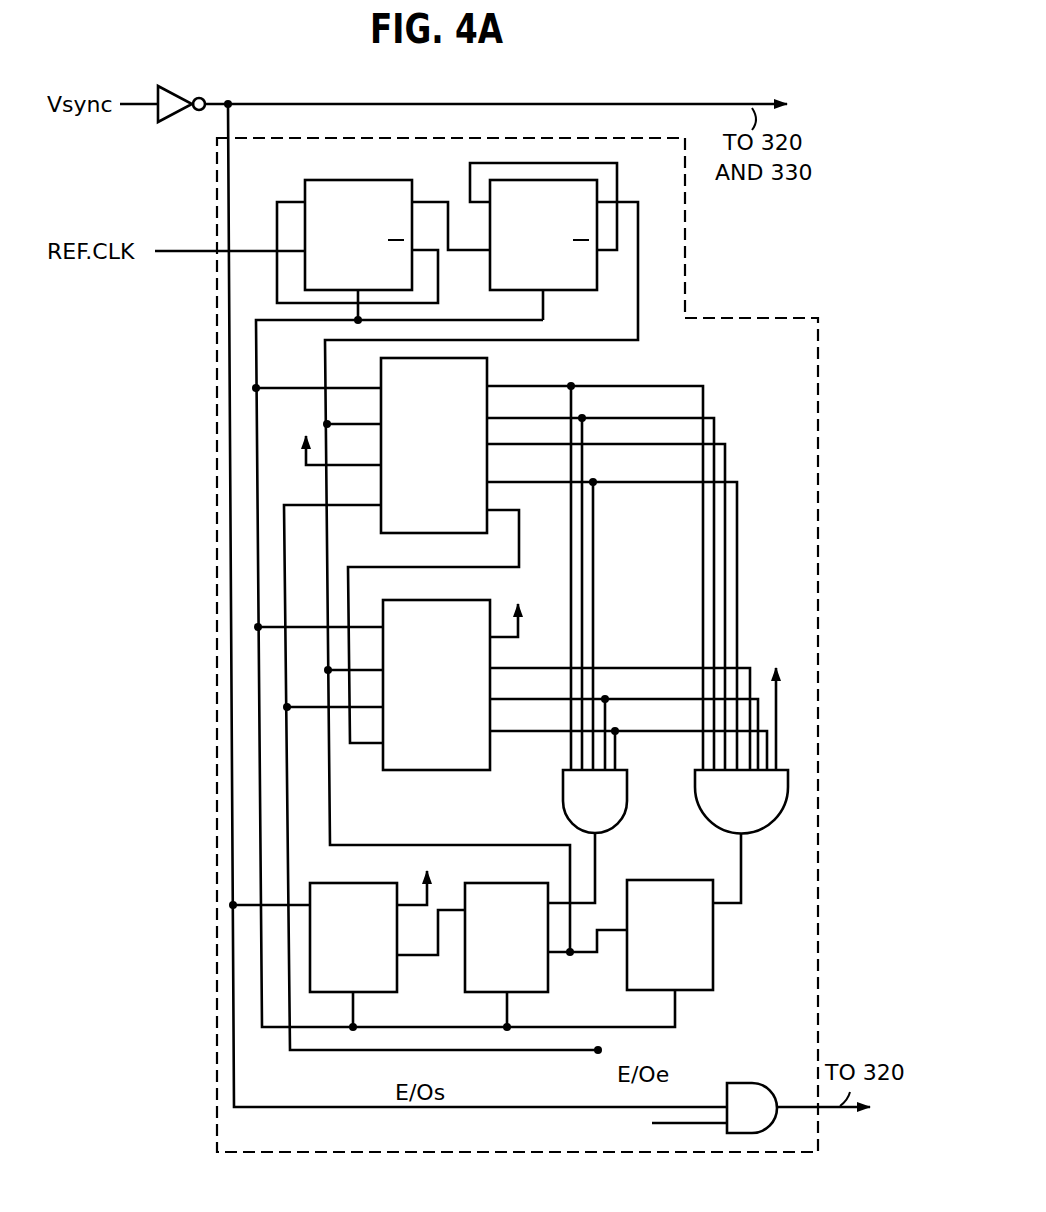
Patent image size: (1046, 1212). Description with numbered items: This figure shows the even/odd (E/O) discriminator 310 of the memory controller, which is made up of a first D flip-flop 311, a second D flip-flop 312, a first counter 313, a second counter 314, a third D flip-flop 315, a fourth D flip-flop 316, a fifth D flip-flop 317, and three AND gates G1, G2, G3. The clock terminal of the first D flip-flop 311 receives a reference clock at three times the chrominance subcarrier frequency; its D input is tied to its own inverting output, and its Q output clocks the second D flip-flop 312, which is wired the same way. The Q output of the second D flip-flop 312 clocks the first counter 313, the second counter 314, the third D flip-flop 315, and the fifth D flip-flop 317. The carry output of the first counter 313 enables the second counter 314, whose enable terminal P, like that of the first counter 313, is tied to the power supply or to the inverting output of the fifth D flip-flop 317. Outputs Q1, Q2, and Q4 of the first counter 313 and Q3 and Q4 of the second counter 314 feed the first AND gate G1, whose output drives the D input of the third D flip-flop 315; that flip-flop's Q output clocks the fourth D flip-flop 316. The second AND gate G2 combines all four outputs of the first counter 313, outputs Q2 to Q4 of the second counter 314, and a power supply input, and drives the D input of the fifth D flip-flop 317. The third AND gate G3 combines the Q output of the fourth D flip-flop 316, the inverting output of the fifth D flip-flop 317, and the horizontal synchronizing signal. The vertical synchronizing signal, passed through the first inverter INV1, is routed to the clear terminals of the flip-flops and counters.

The even/odd discriminator 310 is at (217, 722).
The first D flip-flop 311 is at (305, 181).
The second D flip-flop 312 is at (592, 292).
The first counter 313 is at (381, 534).
The second counter 314 is at (383, 772).
The third D flip-flop 315 is at (549, 993).
The fourth D flip-flop 316 is at (397, 993).
The fifth D flip-flop 317 is at (713, 990).
The first inverter INV1 is at (214, 98).
The first AND gate G1 is at (563, 808).
The second AND gate G2 is at (712, 818).
The third AND gate G3 is at (742, 1083).